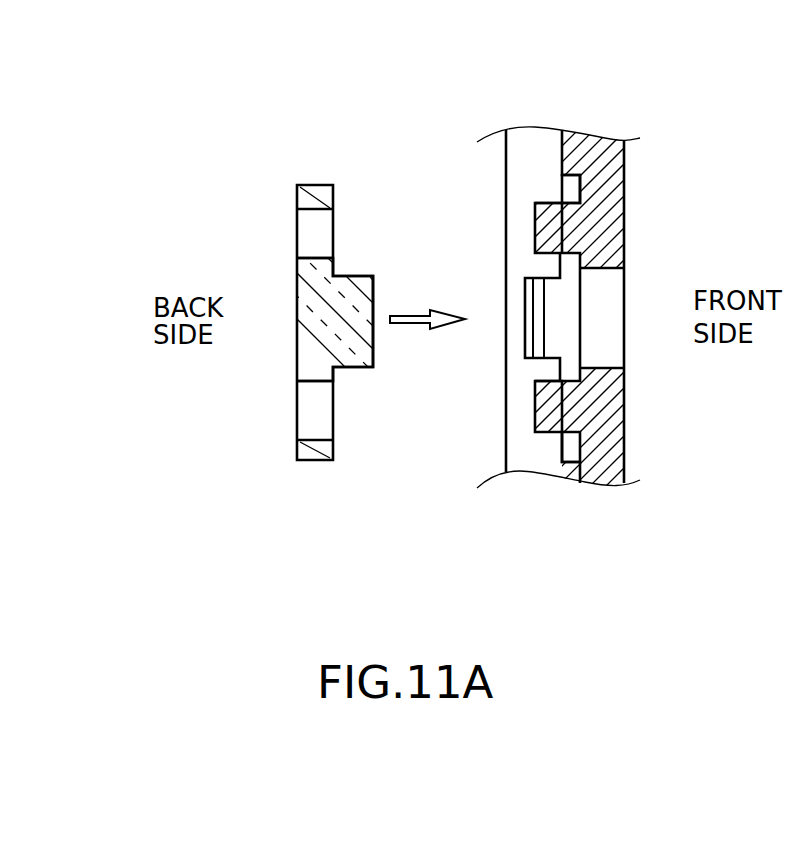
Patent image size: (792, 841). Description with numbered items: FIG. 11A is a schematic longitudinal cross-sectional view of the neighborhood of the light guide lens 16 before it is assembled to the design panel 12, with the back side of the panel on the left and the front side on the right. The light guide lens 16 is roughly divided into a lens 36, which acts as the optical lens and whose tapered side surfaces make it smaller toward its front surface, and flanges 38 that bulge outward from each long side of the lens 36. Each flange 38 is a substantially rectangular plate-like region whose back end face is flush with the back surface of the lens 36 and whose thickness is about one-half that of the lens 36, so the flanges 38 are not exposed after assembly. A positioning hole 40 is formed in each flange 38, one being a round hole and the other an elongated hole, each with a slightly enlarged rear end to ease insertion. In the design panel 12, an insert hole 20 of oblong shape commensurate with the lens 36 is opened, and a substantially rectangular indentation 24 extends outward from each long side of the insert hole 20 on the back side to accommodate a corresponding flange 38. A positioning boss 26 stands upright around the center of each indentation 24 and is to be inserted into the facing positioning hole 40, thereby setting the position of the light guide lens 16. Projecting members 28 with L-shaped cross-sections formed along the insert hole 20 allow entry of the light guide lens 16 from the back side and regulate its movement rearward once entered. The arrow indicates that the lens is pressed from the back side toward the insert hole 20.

The design panel 12 is at (617, 193).
The light guide lens 16 is at (318, 126).
The insert hole 20 is at (613, 303).
The indentation 24 is at (572, 196).
The positioning boss 26 is at (550, 213).
The projecting member 28 is at (528, 302).
The lens 36 is at (358, 298).
The flange 38 is at (322, 190).
The positioning hole 40 is at (306, 232).